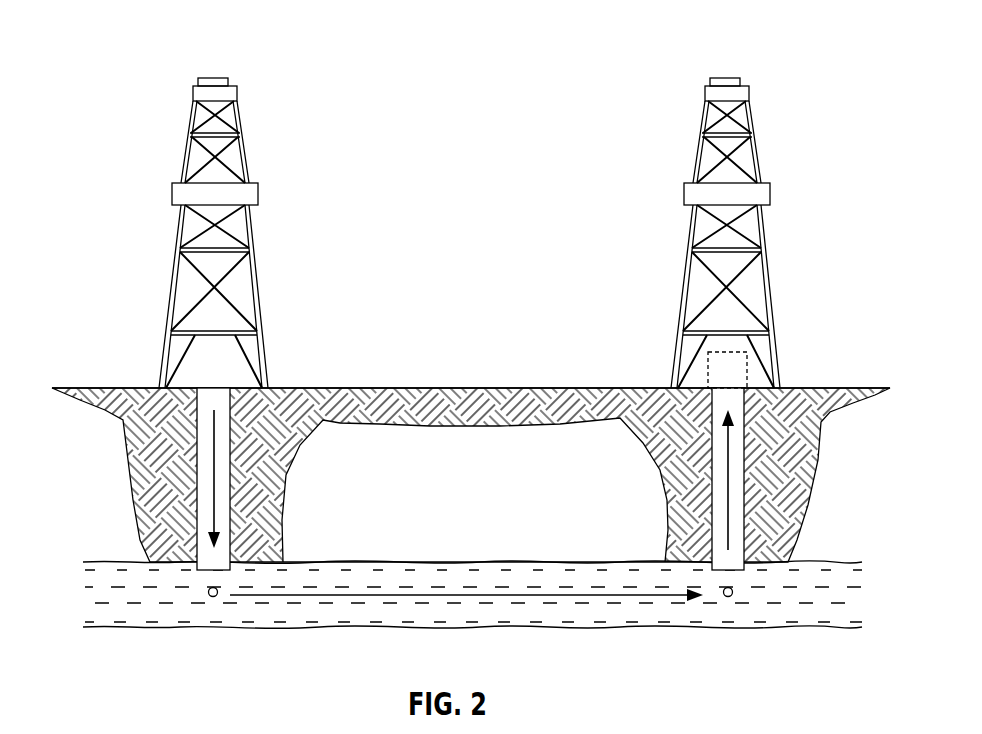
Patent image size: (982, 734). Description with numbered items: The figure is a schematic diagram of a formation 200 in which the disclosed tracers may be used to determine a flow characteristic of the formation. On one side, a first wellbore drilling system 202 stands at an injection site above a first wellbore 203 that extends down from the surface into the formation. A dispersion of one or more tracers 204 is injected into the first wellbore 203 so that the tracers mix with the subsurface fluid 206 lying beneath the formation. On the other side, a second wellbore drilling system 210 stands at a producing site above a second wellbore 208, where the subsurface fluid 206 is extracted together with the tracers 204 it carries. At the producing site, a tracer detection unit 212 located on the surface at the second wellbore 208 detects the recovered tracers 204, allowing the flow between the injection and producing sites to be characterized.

The formation 200 is at (236, 42).
The first wellbore drilling system 202 is at (172, 197).
The first wellbore 203 is at (245, 421).
The tracers 204 is at (212, 598).
The subsurface fluid 206 is at (110, 618).
The second wellbore 208 is at (697, 421).
The second wellbore drilling system 210 is at (770, 197).
The tracer detection unit 212 is at (738, 373).